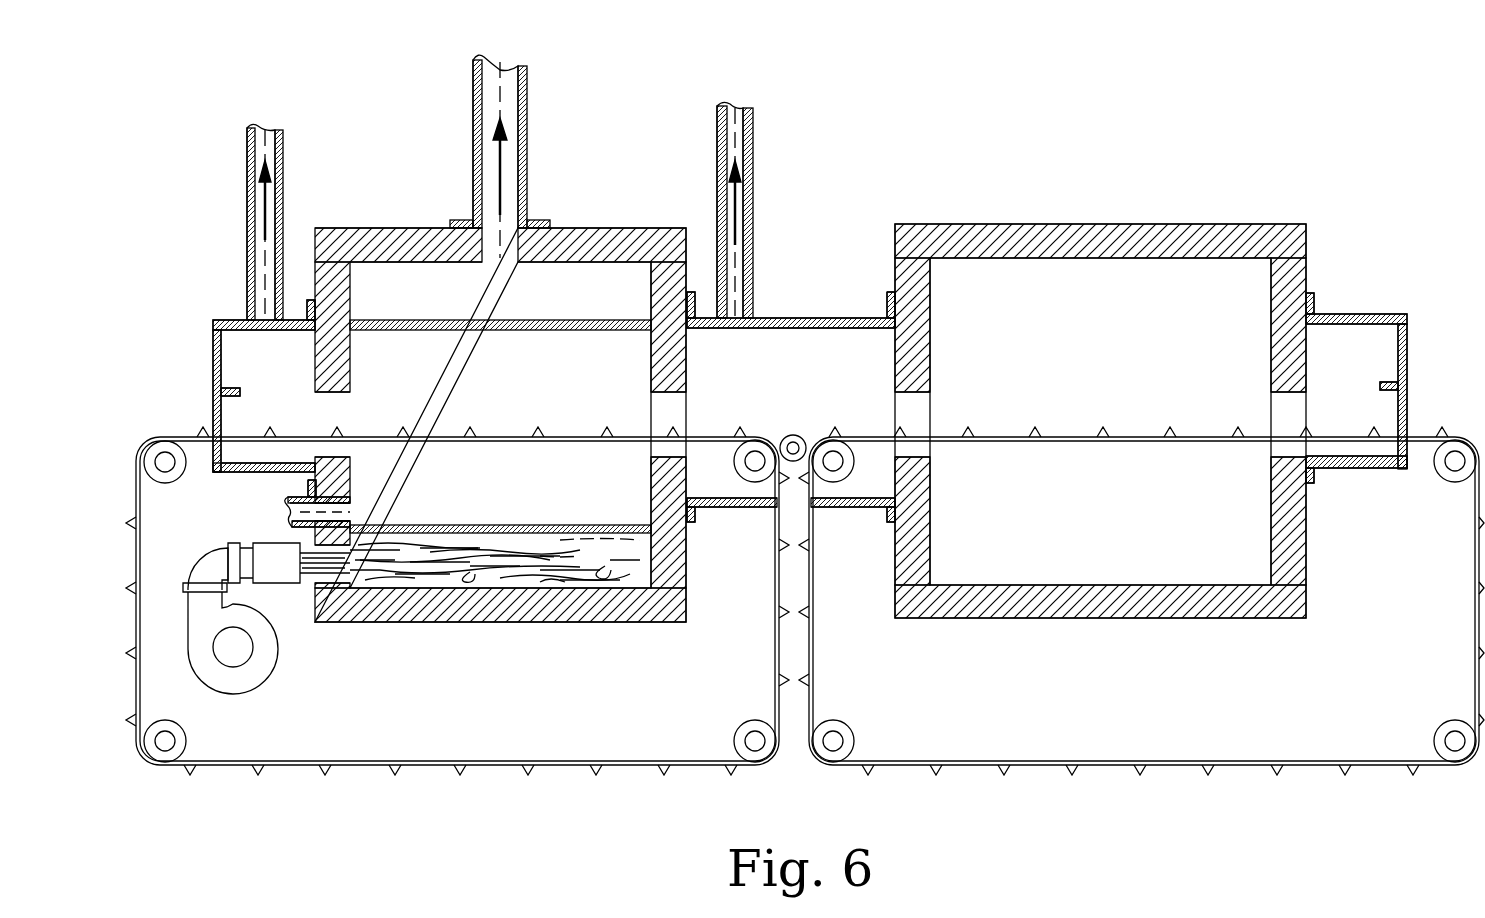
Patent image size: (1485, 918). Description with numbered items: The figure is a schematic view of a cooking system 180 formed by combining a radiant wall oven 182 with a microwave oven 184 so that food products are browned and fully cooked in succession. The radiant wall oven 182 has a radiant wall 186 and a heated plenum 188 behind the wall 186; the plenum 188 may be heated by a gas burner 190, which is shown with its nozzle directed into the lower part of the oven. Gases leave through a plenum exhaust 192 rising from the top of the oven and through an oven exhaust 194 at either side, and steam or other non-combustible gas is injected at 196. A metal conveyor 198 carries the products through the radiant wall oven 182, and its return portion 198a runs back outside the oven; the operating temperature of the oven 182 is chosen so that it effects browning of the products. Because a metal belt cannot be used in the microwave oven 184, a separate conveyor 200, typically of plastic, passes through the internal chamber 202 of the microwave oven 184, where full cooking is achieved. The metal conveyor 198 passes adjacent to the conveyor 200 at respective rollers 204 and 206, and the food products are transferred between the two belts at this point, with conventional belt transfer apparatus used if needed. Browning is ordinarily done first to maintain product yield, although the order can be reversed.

The cooking system 180 is at (912, 137).
The radiant wall oven 182 is at (628, 210).
The microwave oven 184 is at (1145, 222).
The radiant wall 186 is at (490, 330).
The heated plenum 188 is at (408, 292).
The gas burner 190 is at (318, 585).
The plenum exhaust 192 is at (527, 163).
The oven exhaust 194 is at (283, 207).
The steam injection point 196 is at (280, 512).
The conveyor 198 is at (515, 440).
The return portion 198a is at (497, 766).
The conveyor 200 is at (995, 437).
The internal chamber 202 is at (1126, 368).
The roller 204 is at (740, 483).
The roller 206 is at (843, 483).